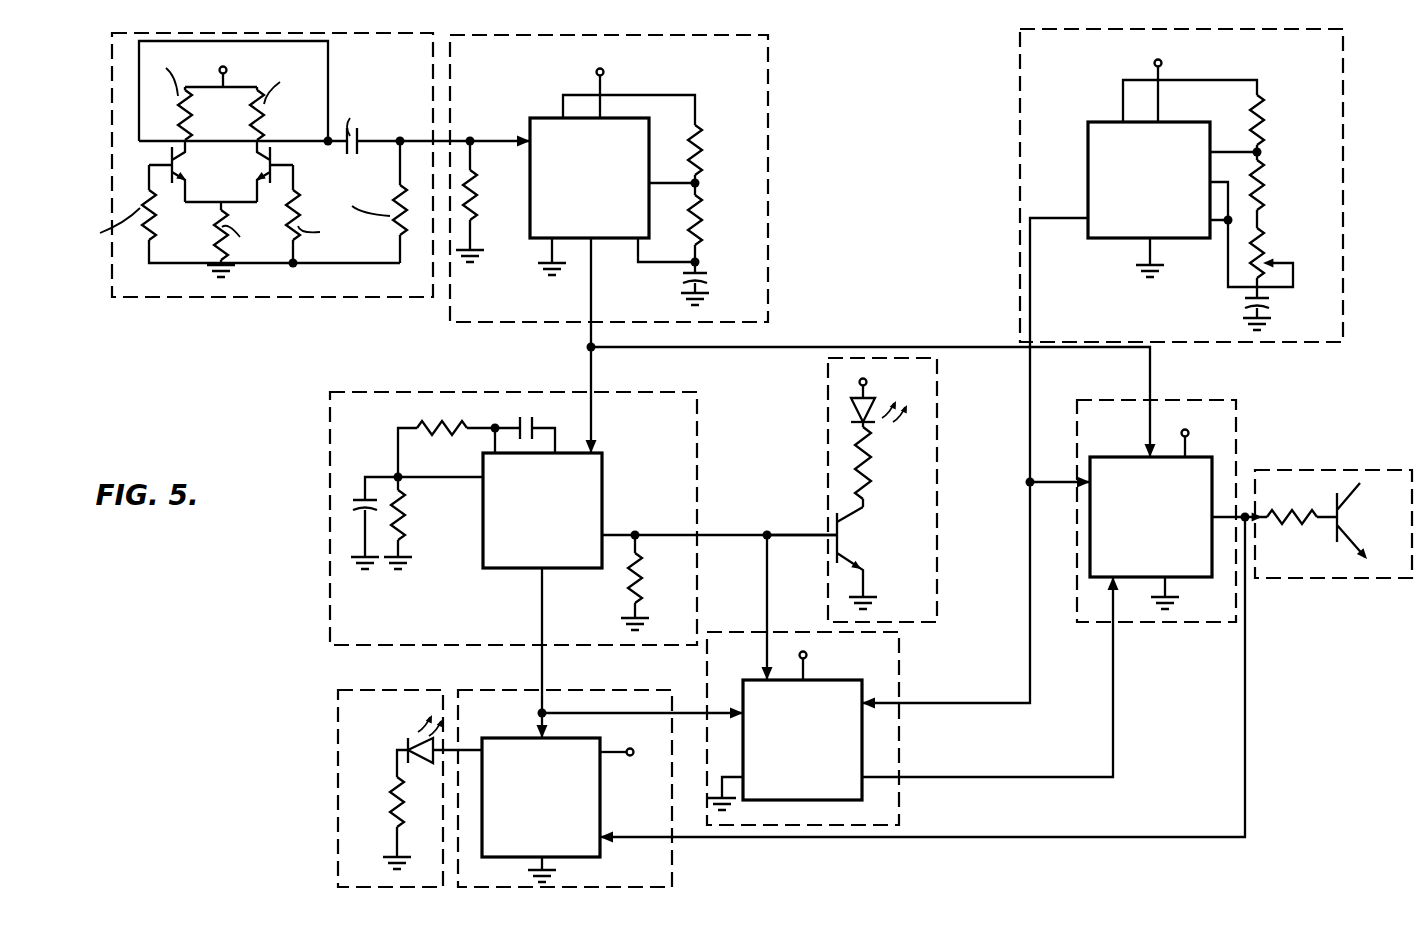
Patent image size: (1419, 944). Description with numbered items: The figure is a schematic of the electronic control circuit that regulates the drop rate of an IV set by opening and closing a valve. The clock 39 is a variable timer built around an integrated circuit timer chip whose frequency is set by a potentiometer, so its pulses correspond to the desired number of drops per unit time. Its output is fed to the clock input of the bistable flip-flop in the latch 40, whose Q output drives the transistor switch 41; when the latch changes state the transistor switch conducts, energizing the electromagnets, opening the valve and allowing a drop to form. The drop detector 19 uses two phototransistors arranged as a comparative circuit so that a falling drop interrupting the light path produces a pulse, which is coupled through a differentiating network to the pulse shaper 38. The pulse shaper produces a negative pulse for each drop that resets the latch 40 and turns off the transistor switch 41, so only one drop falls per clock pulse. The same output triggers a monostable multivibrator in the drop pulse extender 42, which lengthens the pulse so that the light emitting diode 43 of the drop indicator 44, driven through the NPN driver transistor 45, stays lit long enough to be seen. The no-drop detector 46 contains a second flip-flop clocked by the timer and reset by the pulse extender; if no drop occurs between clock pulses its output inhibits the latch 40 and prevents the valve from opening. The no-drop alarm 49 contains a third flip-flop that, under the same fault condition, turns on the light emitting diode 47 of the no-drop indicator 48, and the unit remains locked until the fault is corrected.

The drop detector 19 is at (100, 96).
The pulse shaper 38 is at (782, 141).
The clock 39 is at (1008, 150).
The latch 40 is at (1258, 409).
The transistor switch 41 is at (1318, 462).
The drop pulse extender 42 is at (330, 463).
The light emitting diode 43 is at (905, 418).
The drop indicator 44 is at (937, 501).
The NPN driver transistor 45 is at (860, 542).
The no-drop detector 46 is at (899, 811).
The light emitting diode 47 is at (397, 725).
The no-drop indicator 48 is at (338, 773).
The no-drop alarm 49 is at (672, 870).